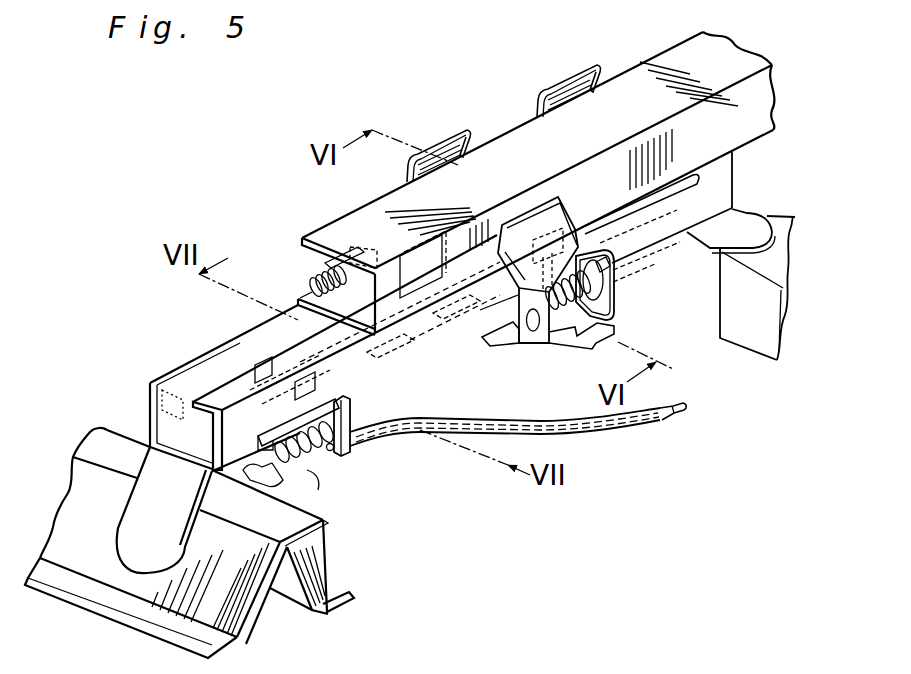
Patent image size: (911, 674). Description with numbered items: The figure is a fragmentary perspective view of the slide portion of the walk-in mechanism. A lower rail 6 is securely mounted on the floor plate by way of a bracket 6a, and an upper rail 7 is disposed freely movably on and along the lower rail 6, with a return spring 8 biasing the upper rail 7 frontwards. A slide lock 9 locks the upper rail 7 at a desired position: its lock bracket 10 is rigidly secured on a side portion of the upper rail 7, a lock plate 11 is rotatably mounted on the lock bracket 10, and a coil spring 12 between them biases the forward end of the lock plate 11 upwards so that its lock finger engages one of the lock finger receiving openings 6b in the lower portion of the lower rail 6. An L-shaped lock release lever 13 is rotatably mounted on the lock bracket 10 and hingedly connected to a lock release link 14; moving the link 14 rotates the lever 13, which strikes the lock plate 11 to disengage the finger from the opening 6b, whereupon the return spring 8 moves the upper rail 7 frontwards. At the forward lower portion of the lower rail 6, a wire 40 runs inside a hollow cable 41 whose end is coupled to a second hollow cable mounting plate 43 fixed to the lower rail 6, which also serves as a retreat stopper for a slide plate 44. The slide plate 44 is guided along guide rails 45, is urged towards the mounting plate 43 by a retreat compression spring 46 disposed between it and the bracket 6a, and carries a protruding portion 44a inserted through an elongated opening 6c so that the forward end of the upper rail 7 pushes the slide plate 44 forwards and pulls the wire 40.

The lower rail 6 is at (173, 372).
The bracket 6a is at (143, 490).
The lock finger receiving opening 6b is at (428, 357).
The elongated opening 6c is at (208, 374).
The upper rail 7 is at (337, 223).
The return spring 8 is at (297, 262).
The slide lock 9 is at (530, 360).
The lock bracket 10 is at (614, 309).
The lock plate 11 is at (610, 284).
The coil spring 12 is at (612, 322).
The lock release lever 13 is at (605, 272).
The lock release link 14 is at (695, 189).
The wire 40 is at (684, 408).
The hollow cable 41 is at (632, 424).
The second hollow cable mounting plate 43 is at (357, 406).
The slide plate 44 is at (333, 415).
The protruding portion 44a is at (345, 386).
The guide rail 45 is at (290, 458).
The retreat compression spring 46 is at (315, 442).